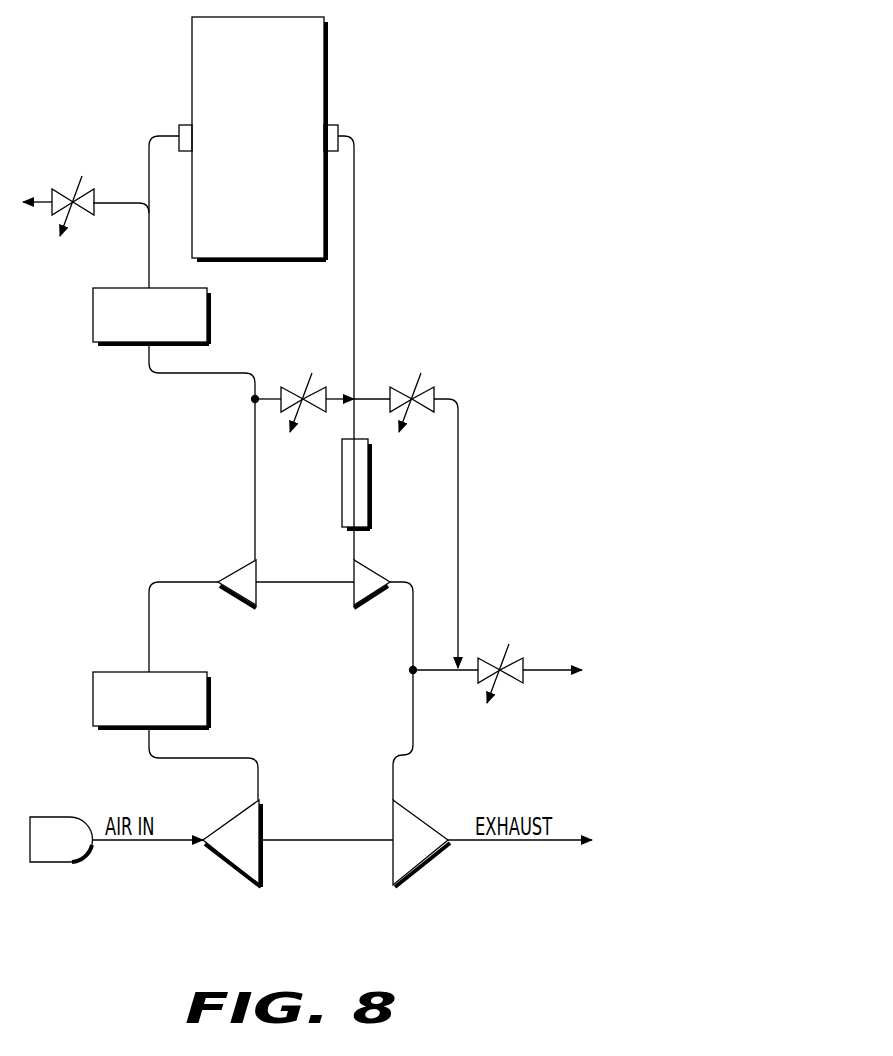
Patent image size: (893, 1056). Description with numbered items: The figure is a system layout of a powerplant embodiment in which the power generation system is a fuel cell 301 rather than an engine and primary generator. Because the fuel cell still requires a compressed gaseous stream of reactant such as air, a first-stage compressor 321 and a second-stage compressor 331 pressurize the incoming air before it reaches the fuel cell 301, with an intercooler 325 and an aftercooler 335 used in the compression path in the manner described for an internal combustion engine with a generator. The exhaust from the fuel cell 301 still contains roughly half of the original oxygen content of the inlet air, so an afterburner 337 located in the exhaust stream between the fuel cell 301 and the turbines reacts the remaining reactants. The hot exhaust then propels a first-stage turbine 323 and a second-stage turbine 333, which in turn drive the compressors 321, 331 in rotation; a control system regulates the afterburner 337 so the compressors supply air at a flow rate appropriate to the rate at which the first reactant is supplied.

The fuel cell 301 is at (258, 138).
The first-stage compressor 321 is at (232, 843).
The first-stage turbine 323 is at (421, 843).
The intercooler 325 is at (151, 700).
The second-stage compressor 331 is at (242, 572).
The second-stage turbine 333 is at (364, 572).
The aftercooler 335 is at (151, 316).
The afterburner 337 is at (488, 517).